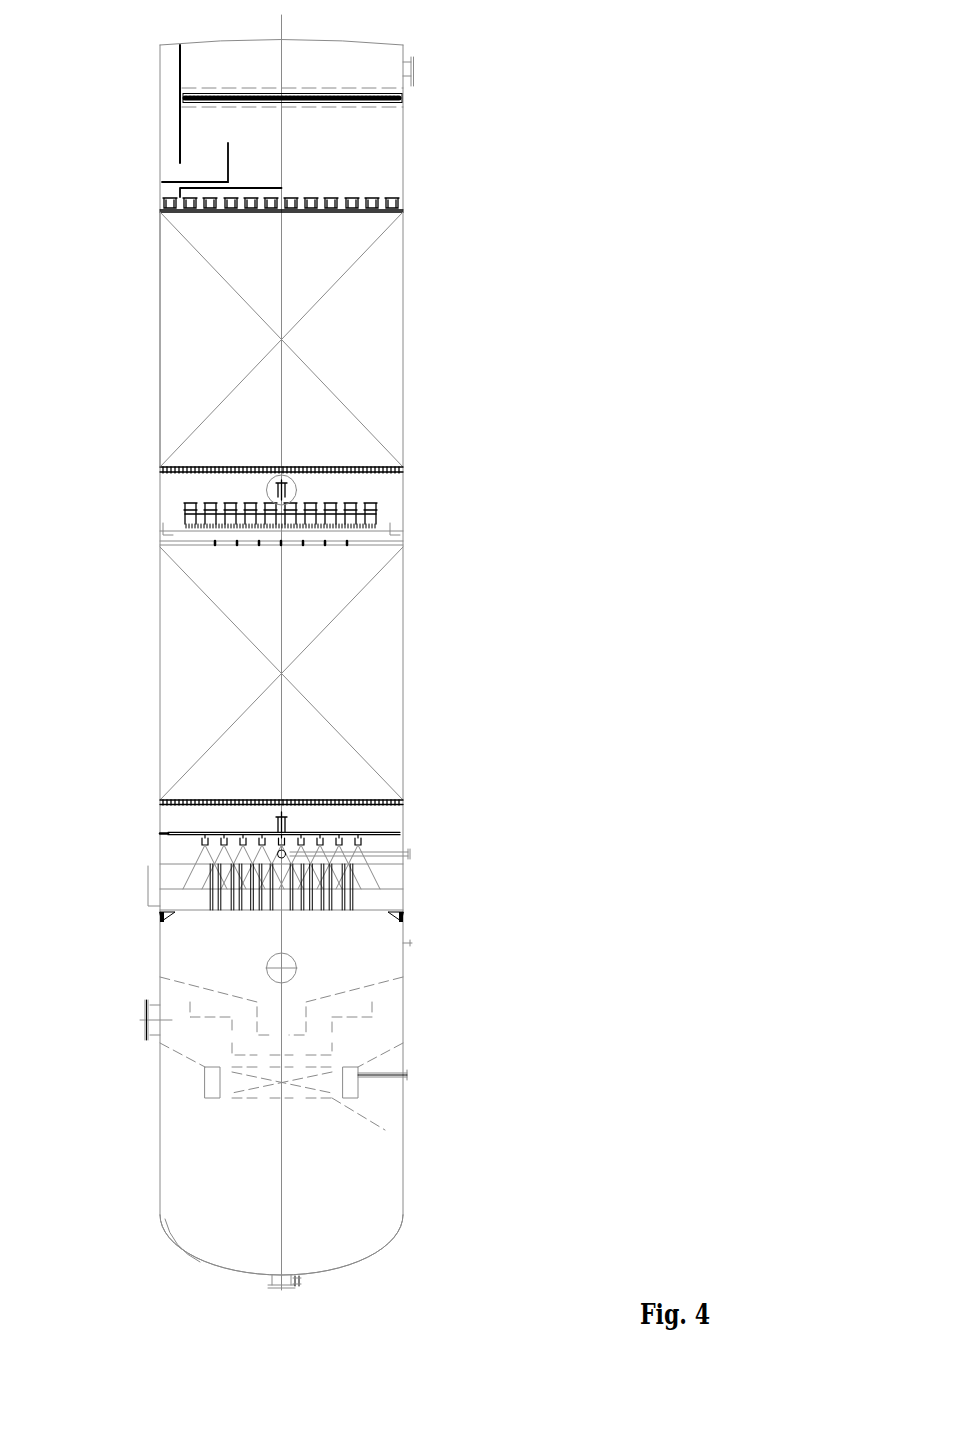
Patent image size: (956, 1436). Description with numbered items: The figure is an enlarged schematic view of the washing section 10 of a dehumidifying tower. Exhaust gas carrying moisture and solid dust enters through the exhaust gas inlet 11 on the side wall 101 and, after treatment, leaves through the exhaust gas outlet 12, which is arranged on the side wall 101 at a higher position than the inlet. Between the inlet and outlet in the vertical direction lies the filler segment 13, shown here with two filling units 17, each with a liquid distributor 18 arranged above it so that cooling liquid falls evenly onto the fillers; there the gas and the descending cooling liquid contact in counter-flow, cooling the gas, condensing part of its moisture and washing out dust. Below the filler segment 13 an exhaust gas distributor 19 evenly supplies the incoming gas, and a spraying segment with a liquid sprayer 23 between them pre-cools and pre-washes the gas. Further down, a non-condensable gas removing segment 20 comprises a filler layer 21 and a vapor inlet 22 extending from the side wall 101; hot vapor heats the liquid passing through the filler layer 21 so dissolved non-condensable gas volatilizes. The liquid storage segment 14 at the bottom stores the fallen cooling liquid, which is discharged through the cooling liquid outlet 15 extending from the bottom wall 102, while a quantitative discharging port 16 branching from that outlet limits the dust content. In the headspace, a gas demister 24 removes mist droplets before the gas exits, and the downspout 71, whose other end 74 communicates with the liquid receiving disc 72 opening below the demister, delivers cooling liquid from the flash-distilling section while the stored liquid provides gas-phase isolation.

The washing section 10 is at (541, 246).
The exhaust gas inlet 11 is at (145, 1008).
The exhaust gas outlet 12 is at (413, 63).
The filler segment 13 is at (120, 433).
The liquid storage segment 14 is at (353, 1247).
The cooling liquid outlet 15 is at (288, 1283).
The quantitative discharging port 16 is at (301, 1283).
The filling unit 17 is at (178, 338).
The liquid distributor 18 is at (160, 208).
The exhaust gas distributor 19 is at (160, 888).
The non-condensable gas removing segment 20 is at (185, 1088).
The filler layer 21 is at (330, 1098).
The vapor inlet 22 is at (413, 1078).
The liquid sprayer 23 is at (165, 832).
The gas demister 24 is at (382, 108).
The downspout 71 is at (170, 76).
The liquid receiving disc 72 is at (230, 160).
The other end of the downspout 74 is at (170, 155).
The side wall 101 is at (403, 500).
The bottom wall 102 is at (200, 1260).